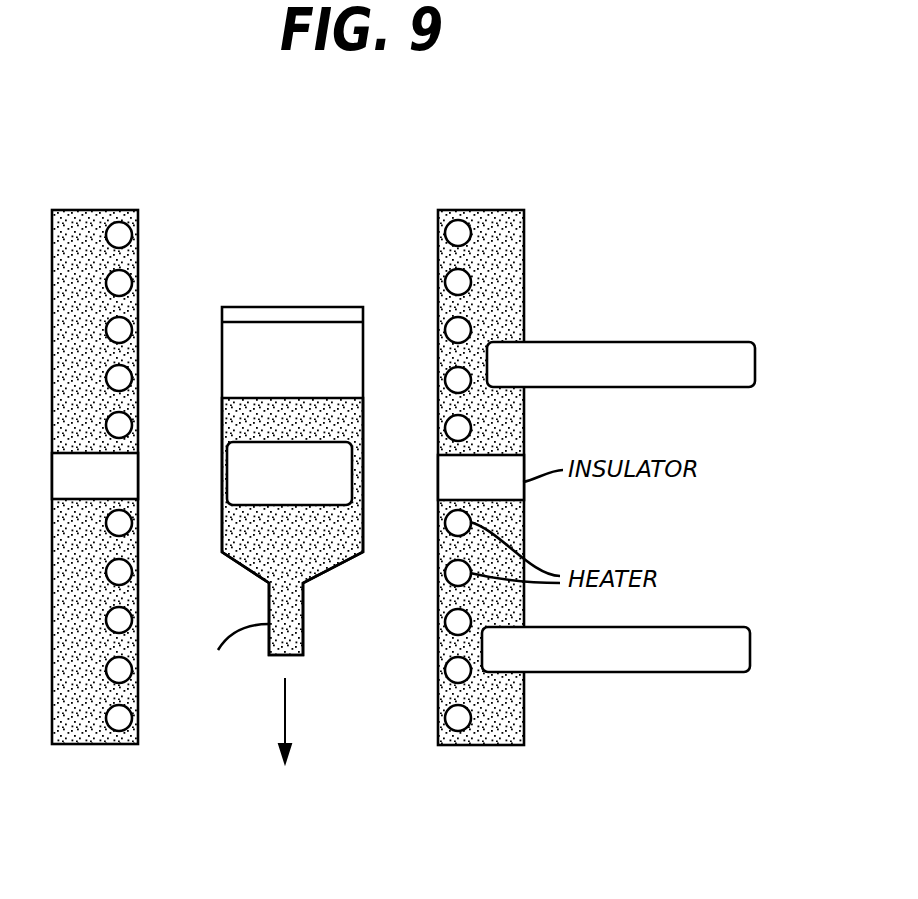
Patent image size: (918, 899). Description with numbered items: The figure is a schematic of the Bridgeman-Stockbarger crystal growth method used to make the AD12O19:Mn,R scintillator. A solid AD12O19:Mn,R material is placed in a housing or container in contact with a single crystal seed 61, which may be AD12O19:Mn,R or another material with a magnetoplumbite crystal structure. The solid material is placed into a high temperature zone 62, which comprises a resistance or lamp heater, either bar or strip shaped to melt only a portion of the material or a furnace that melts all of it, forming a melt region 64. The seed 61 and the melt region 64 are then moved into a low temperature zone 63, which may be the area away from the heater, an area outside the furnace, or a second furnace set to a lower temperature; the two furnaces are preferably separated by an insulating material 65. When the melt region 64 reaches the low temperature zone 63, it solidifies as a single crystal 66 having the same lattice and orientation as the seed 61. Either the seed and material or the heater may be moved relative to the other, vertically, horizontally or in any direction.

The single crystal seed 61 is at (269, 604).
The high temperature zone 62 is at (730, 347).
The low temperature zone 63 is at (715, 625).
The melt region 64 is at (318, 455).
The insulating material 65 is at (518, 461).
The single crystal 66 is at (363, 428).